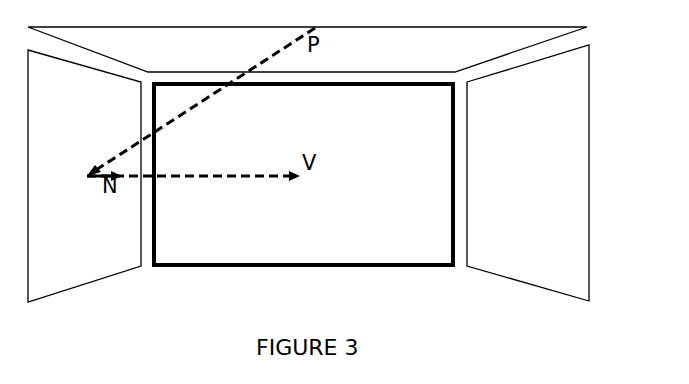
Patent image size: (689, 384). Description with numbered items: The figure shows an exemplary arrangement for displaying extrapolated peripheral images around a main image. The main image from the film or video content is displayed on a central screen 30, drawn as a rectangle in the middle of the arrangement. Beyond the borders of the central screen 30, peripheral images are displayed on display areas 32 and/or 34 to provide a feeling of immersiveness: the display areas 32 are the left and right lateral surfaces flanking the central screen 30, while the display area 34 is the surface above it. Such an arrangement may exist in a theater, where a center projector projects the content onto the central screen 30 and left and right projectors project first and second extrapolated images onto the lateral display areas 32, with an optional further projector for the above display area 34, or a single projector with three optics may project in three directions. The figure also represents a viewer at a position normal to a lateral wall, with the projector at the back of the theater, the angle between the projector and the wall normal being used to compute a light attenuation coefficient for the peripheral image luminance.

The central screen 30 is at (303, 174).
The display area 32 is at (308, 173).
The display area 34 is at (307, 49).